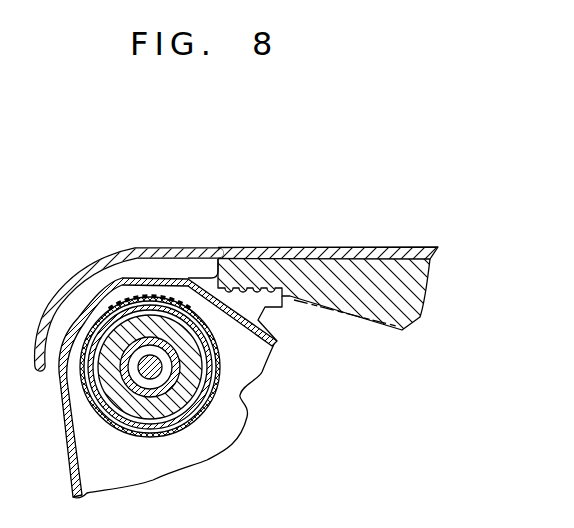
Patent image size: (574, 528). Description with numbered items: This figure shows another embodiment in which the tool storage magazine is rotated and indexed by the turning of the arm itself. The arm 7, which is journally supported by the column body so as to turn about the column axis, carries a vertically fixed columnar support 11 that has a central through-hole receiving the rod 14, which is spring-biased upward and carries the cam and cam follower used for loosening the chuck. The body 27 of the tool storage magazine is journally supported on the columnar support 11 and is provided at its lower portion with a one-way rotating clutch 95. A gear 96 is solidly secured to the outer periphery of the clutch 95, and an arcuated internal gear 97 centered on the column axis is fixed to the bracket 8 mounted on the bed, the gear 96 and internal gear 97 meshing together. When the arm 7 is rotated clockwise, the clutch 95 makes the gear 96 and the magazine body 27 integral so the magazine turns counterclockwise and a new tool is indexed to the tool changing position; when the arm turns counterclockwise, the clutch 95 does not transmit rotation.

The arm 7 is at (60, 421).
The bracket 8 is at (346, 250).
The columnar support 11 is at (175, 431).
The rod 14 is at (158, 370).
The body of tool storage magazine 27 is at (113, 417).
The one-way rotating clutch 95 is at (207, 392).
The gear 96 is at (200, 377).
The arcuated internal gear 97 is at (339, 308).